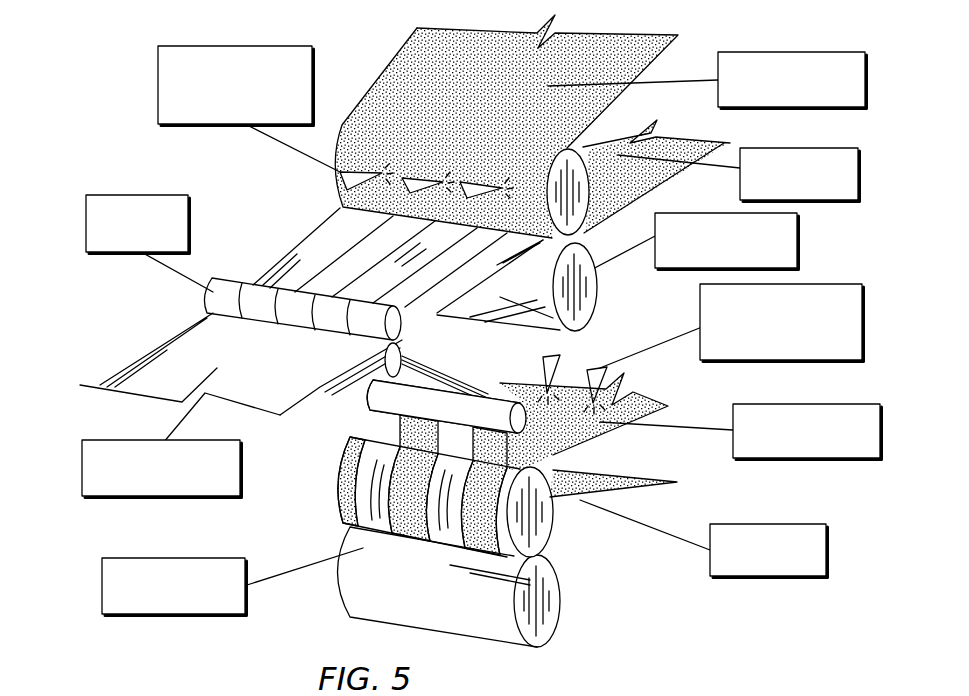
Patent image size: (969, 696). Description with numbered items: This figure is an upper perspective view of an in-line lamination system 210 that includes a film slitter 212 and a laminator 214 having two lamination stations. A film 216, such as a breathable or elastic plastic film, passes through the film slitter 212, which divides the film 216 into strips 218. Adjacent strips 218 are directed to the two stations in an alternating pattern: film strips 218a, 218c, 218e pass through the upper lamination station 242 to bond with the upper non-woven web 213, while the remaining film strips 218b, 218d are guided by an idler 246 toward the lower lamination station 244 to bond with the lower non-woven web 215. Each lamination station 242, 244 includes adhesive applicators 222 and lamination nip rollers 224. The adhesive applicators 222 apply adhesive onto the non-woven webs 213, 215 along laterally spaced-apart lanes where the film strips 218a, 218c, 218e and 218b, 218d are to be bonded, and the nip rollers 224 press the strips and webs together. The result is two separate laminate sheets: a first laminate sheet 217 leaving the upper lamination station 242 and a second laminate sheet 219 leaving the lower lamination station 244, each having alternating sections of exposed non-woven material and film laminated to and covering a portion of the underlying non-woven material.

The in-line lamination system 210 is at (125, 112).
The film slitter 212 is at (146, 195).
The non-woven web 213 is at (782, 52).
The laminator 214 is at (340, 85).
The non-woven web 215 is at (795, 404).
The film 216 is at (143, 440).
The laminate sheet 217 is at (805, 148).
The strips 218 is at (278, 256).
The film strip 218a is at (422, 308).
The film strip 218b is at (453, 502).
The film strip 218c is at (357, 290).
The film strip 218d is at (390, 500).
The film strip 218e is at (322, 258).
The laminate sheet 219 is at (770, 524).
The adhesive applicators 222 is at (218, 46).
The lamination nip rollers 224 is at (615, 289).
The lamination station 242 is at (800, 234).
The lamination station 244 is at (163, 558).
The idler 246 is at (492, 392).